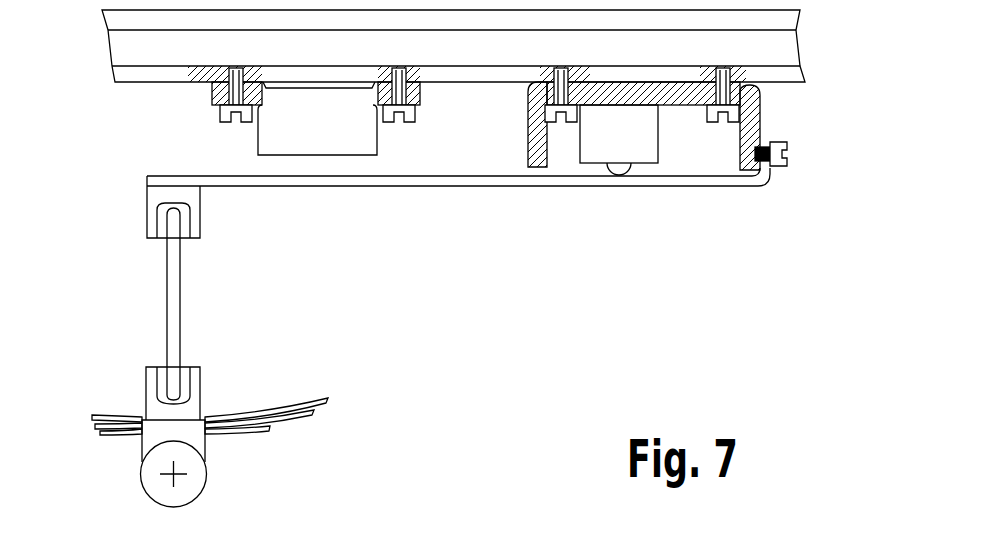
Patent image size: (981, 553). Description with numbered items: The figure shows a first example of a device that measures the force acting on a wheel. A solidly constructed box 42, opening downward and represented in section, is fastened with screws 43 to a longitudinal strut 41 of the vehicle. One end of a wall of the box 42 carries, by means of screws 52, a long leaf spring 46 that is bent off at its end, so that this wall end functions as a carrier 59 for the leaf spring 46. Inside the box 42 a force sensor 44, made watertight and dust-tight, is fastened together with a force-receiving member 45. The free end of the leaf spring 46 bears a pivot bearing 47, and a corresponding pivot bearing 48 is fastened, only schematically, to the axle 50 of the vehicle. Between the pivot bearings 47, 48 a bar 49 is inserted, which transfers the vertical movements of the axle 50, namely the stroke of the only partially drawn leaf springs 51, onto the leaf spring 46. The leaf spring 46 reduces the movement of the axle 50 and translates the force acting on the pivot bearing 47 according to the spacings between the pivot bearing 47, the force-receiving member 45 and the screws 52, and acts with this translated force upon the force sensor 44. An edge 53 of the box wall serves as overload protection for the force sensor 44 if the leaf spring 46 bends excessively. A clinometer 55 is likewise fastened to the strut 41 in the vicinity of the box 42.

The longitudinal strut 41 is at (132, 50).
The box 42 is at (677, 96).
The screws 43 is at (565, 123).
The force sensor 44 is at (650, 150).
The force-receiving member 45 is at (619, 173).
The leaf spring 46 is at (232, 174).
The pivot bearing 47 is at (156, 202).
The pivot bearing 48 is at (157, 405).
The bar 49 is at (172, 300).
The axle 50 is at (160, 482).
The leaf springs 51 is at (93, 428).
The screws 52 is at (788, 163).
The edge 53 is at (538, 164).
The clinometer 55 is at (352, 130).
The carrier 59 is at (755, 118).